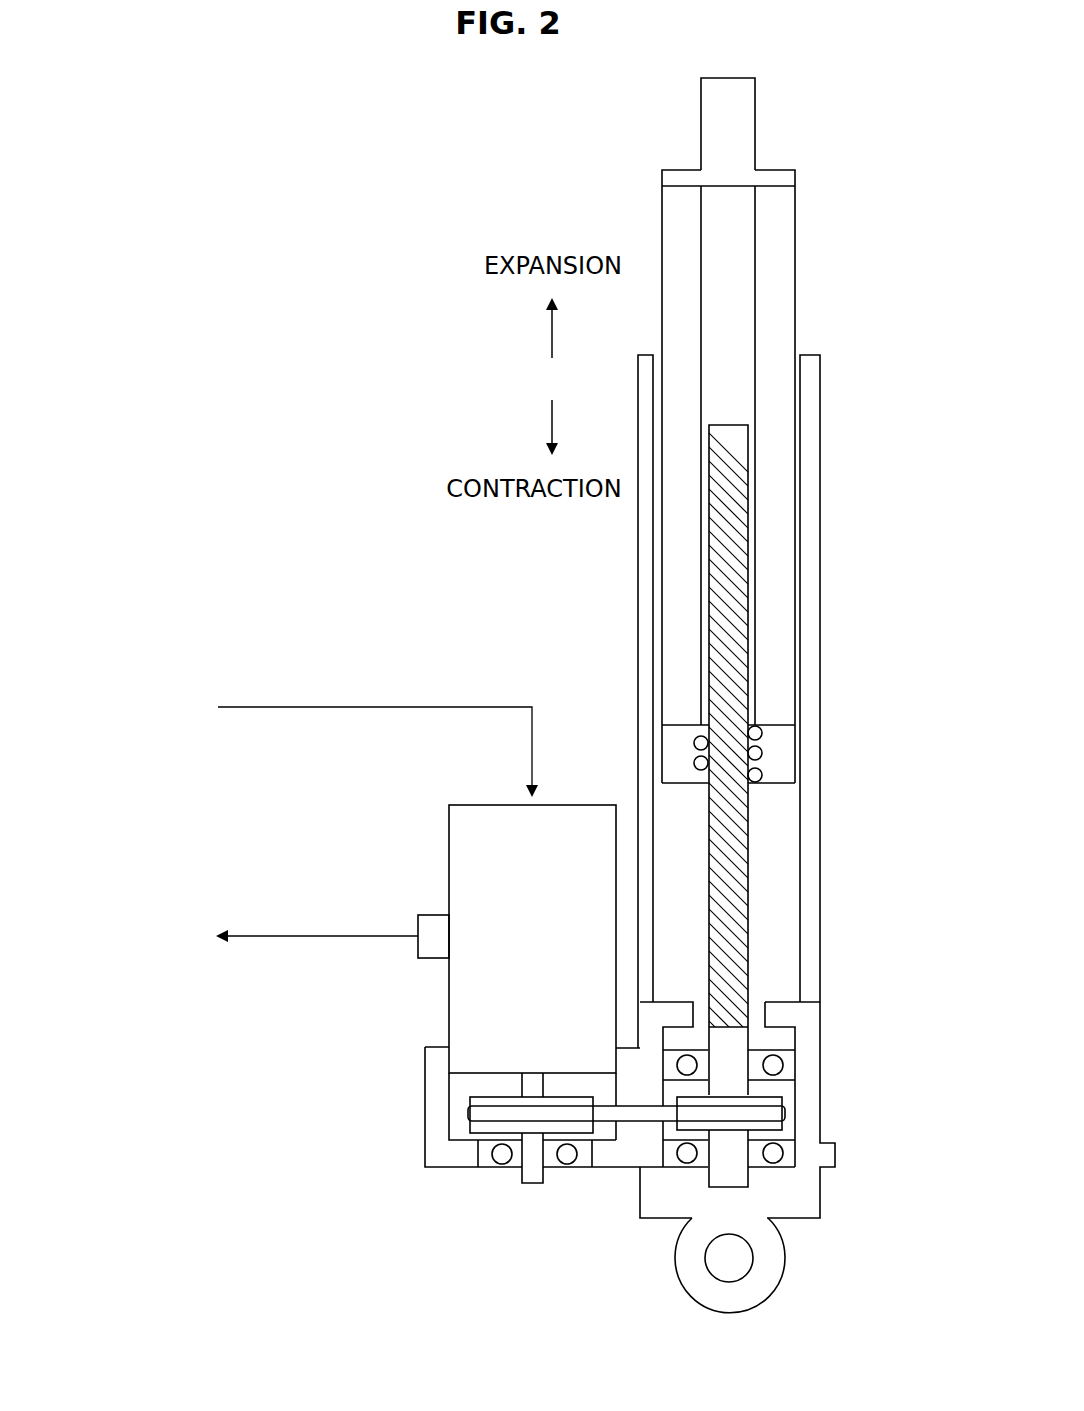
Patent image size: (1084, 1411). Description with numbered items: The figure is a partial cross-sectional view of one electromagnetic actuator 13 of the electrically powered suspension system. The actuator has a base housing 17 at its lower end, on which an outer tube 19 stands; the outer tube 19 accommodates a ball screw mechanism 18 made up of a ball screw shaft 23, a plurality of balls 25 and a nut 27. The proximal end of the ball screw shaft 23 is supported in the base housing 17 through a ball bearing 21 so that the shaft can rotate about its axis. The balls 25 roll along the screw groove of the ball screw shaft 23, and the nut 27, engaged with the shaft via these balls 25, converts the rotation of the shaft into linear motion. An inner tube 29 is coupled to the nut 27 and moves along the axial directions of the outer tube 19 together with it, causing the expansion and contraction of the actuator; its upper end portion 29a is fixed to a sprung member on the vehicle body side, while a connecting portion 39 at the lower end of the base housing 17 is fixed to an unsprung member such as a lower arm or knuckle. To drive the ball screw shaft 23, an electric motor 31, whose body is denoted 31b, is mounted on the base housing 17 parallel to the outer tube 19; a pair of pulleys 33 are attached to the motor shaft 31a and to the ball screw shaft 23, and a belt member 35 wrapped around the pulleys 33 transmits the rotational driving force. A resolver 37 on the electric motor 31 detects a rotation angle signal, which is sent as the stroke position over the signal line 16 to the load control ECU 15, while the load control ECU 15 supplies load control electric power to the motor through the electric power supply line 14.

The electromagnetic actuator 13 is at (845, 194).
The electric power supply line 14 is at (372, 706).
The load control ECU 15 is at (122, 822).
The signal line 16 is at (303, 930).
The base housing 17 is at (808, 1103).
The ball screw mechanism 18 is at (813, 785).
The outer tube 19 is at (810, 412).
The ball bearing 21 is at (773, 1065).
The ball screw shaft 23 is at (898, 647).
The balls 25 is at (762, 733).
The nut 27 is at (683, 735).
The inner tube 29 is at (780, 267).
The upper end portion 29a is at (737, 127).
The electric motor 31 is at (489, 1008).
The motor shaft 31a is at (533, 1185).
The motor body 31b is at (465, 837).
The pulleys 33 is at (475, 1127).
The belt member 35 is at (633, 1118).
The resolver 37 is at (435, 922).
The connecting portion 39 is at (772, 1262).